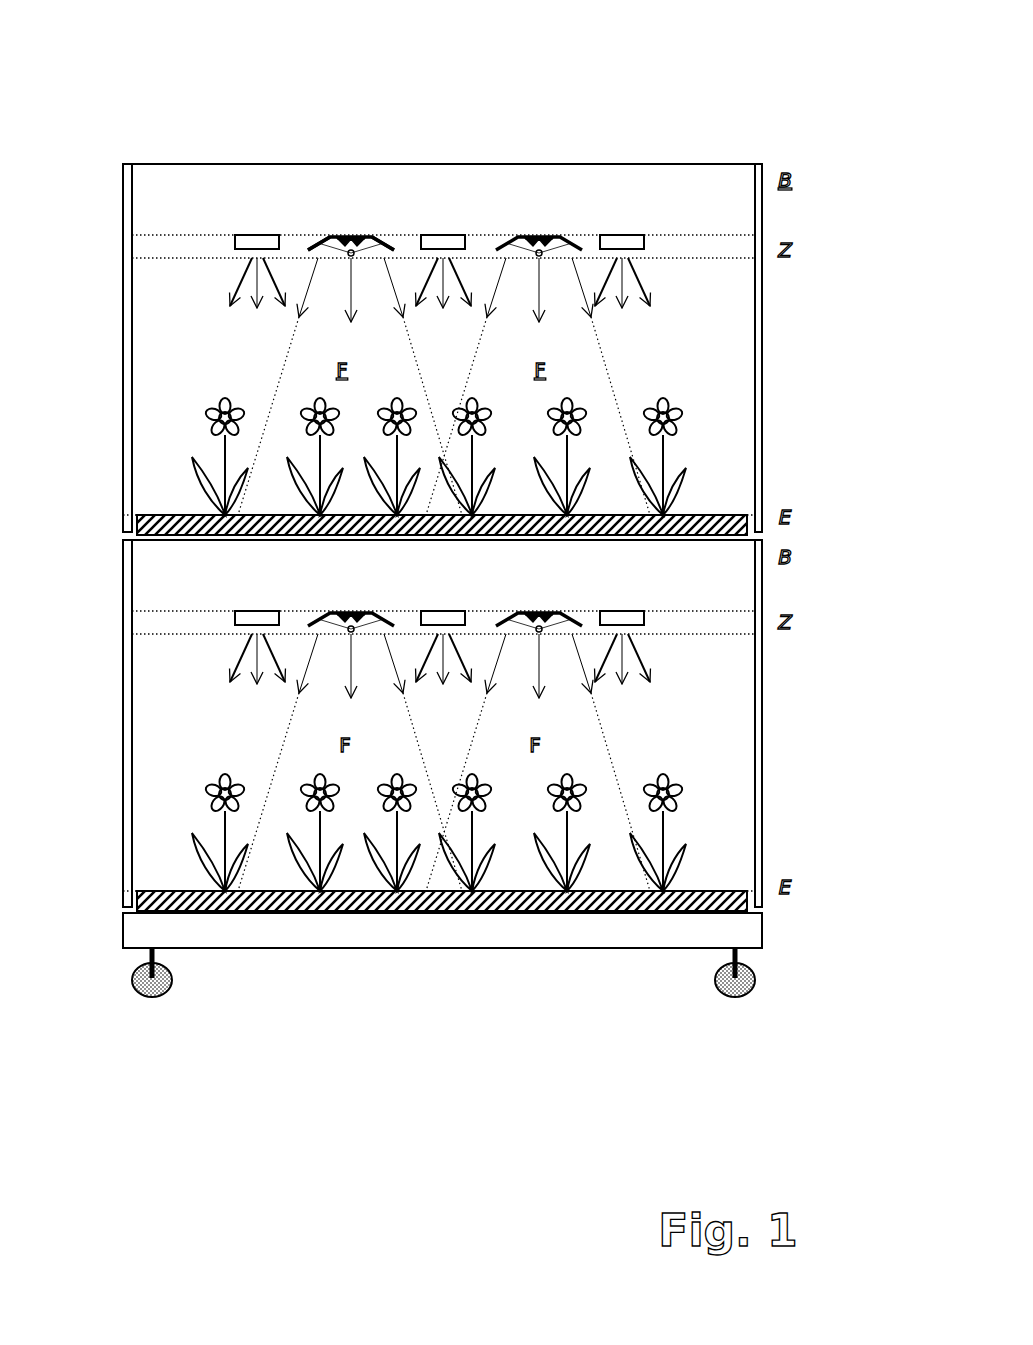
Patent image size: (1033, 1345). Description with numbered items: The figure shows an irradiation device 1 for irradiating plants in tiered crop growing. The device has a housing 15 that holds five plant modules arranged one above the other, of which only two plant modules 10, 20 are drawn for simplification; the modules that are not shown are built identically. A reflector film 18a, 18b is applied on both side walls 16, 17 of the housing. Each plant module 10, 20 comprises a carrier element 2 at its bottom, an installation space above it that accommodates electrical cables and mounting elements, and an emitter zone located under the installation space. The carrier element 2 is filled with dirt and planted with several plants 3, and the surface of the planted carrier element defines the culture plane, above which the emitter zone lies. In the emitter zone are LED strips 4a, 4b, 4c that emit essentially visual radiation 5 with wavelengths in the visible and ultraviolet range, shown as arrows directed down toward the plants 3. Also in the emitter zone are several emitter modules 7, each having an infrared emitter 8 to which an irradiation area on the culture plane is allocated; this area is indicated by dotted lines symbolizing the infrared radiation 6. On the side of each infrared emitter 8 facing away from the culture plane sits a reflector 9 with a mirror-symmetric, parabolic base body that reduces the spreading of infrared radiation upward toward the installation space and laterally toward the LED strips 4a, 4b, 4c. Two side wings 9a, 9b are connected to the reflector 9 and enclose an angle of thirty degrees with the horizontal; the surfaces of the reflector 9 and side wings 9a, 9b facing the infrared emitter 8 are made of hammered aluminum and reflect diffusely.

The irradiation device 1 is at (437, 504).
The plant module 10 is at (437, 321).
The plant module 20 is at (92, 745).
The housing 15 is at (702, 165).
The side wall 16 is at (123, 280).
The side wall 17 is at (762, 313).
The reflector film 18a is at (132, 470).
The reflector film 18b is at (757, 480).
The carrier element 2 is at (745, 525).
The plants 3 is at (595, 468).
The LED strip 4a is at (257, 235).
The LED strip 4b is at (443, 235).
The LED strip 4c is at (622, 235).
The visual radiation 5 is at (642, 278).
The infrared radiation 6 is at (610, 387).
The emitter module 7 is at (582, 232).
The infrared emitter 8 is at (356, 241).
The reflector 9 is at (349, 236).
The side wing 9a is at (328, 236).
The side wing 9b is at (372, 236).